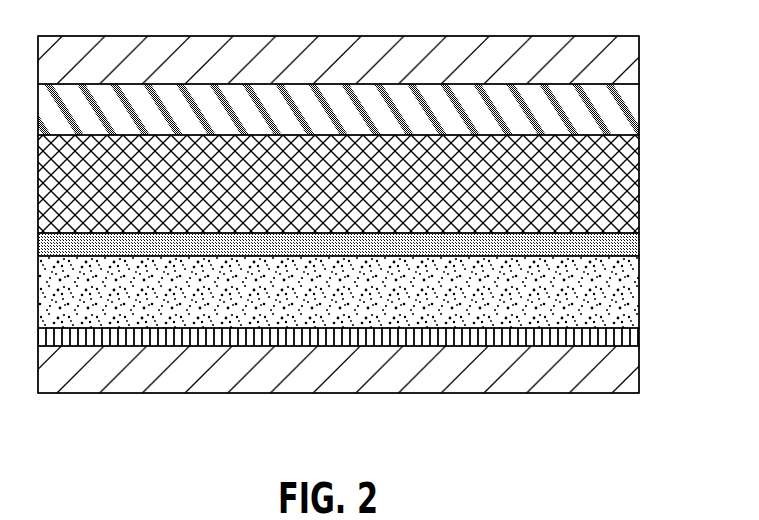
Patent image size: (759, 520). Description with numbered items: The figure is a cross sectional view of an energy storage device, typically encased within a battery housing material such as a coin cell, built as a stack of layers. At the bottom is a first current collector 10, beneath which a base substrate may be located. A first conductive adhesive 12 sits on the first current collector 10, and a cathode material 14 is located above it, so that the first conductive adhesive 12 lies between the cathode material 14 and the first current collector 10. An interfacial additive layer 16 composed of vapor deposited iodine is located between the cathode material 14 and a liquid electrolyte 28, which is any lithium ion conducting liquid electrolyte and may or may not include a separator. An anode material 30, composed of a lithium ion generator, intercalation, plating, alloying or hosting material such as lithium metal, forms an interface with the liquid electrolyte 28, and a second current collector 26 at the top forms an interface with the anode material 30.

The first current collector 10 is at (312, 383).
The first conductive adhesive 12 is at (626, 336).
The cathode material 14 is at (312, 308).
The interfacial additive layer 16 is at (626, 243).
The second current collector 26 is at (312, 75).
The liquid electrolyte 28 is at (312, 197).
The anode material 30 is at (312, 123).